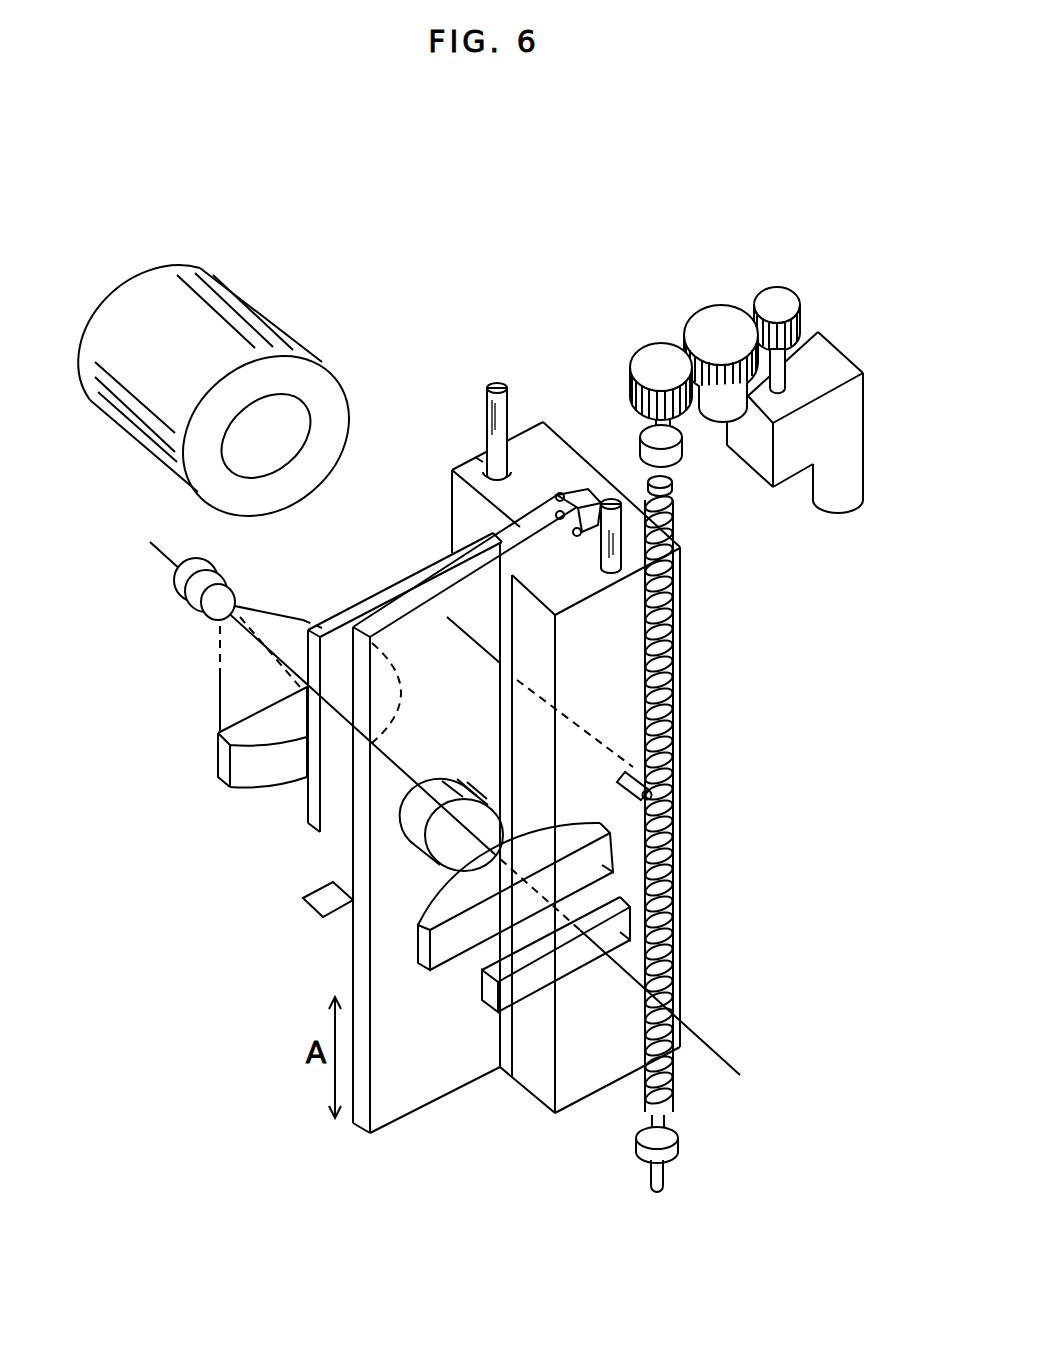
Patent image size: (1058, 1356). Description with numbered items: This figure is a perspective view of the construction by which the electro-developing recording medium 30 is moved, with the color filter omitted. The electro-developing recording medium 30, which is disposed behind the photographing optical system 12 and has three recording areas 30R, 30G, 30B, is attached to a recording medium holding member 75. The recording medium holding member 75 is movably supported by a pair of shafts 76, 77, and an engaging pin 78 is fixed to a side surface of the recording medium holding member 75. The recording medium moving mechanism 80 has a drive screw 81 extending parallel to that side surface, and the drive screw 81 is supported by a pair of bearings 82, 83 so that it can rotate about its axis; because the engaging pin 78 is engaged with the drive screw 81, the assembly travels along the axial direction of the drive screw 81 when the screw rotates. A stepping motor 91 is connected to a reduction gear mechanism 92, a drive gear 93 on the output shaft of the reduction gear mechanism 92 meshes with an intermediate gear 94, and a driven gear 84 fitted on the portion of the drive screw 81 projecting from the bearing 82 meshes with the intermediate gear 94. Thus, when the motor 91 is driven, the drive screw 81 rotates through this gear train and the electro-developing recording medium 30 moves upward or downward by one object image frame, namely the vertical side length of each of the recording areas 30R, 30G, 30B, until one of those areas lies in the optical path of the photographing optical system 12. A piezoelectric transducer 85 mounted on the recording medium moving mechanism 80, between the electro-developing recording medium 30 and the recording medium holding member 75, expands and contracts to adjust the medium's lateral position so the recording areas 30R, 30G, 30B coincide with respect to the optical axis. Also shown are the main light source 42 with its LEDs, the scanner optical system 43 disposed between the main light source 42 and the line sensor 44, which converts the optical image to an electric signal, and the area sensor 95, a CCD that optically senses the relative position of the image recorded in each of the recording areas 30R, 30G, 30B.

The photographing optical system 12 is at (133, 310).
The main light source 42 is at (172, 590).
The scanner optical system 43 is at (413, 950).
The area sensor 95 is at (310, 889).
The electro-developing recording medium 30 is at (340, 1137).
The recording area 30R is at (428, 623).
The recording area 30G is at (380, 952).
The recording area 30B is at (393, 1103).
The line sensor 44 is at (488, 1015).
The recording medium holding member 75 is at (528, 1067).
The shaft 76 is at (604, 498).
The shaft 77 is at (495, 384).
The engaging pin 78 is at (649, 790).
The recording medium moving mechanism 80 is at (690, 941).
The drive screw 81 is at (681, 858).
The bearing 82 is at (677, 455).
The bearing 83 is at (679, 1150).
The driven gear 84 is at (657, 360).
The piezoelectric transducer 85 is at (587, 505).
The stepping motor 91 is at (847, 490).
The reduction gear mechanism 92 is at (845, 421).
The drive gear 93 is at (777, 302).
The intermediate gear 94 is at (715, 320).